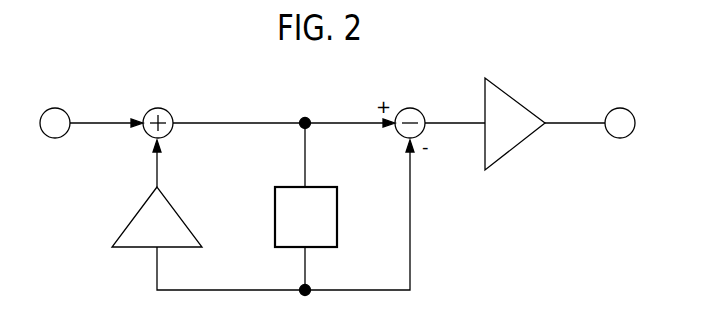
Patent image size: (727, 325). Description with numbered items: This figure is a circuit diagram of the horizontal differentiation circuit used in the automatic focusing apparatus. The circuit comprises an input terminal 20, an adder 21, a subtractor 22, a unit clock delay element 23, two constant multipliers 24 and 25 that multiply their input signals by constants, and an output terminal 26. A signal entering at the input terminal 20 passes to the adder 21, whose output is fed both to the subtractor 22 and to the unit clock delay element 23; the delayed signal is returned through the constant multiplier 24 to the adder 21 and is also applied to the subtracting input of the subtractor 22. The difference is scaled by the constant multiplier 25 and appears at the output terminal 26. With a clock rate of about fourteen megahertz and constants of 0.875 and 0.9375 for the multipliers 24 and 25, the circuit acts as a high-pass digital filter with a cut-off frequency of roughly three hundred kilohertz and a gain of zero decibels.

The input terminal 20 is at (58, 113).
The adder 21 is at (163, 110).
The subtractor 22 is at (418, 108).
The unit clock delay element 23 is at (337, 210).
The constant multiplier 24 is at (150, 223).
The constant multiplier 25 is at (525, 103).
The output terminal 26 is at (625, 113).